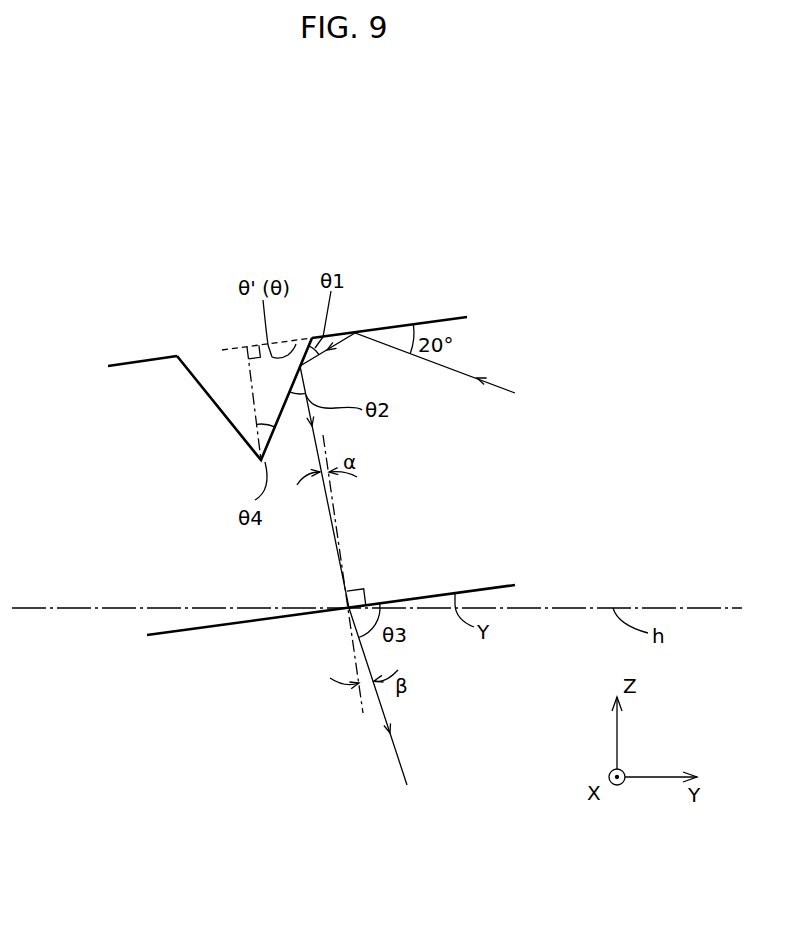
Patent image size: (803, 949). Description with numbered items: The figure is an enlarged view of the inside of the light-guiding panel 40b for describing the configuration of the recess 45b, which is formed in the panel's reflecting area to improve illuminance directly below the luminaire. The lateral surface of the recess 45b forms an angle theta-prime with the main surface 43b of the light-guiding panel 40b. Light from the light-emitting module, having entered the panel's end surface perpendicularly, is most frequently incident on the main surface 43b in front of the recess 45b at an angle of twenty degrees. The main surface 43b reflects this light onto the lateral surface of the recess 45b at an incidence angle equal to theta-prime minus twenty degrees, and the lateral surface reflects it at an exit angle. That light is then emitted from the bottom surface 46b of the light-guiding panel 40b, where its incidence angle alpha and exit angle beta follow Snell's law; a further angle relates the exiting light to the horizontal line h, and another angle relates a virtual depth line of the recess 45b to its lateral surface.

The light-guiding panel 40b is at (133, 373).
The main surface 43b is at (393, 325).
The recess 45b is at (222, 373).
The bottom surface 46b is at (232, 628).